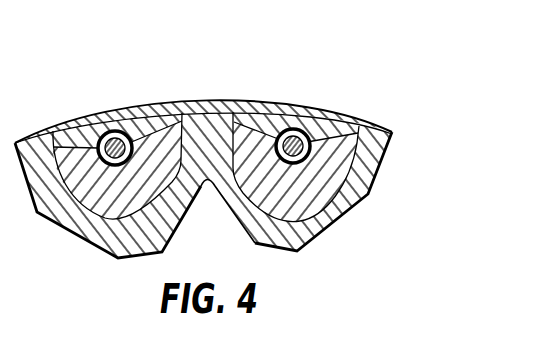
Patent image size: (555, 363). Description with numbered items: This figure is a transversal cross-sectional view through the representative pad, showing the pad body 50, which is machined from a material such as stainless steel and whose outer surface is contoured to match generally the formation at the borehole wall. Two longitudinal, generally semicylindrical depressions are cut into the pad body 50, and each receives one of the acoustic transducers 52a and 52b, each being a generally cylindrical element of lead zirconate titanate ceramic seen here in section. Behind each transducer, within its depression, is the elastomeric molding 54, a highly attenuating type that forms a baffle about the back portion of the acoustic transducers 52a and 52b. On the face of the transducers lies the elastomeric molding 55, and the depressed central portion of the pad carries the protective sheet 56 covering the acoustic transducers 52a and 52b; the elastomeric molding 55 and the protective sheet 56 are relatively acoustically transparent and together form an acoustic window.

The pad body 50 is at (208, 157).
The acoustic transducer 52a is at (109, 131).
The acoustic transducer 52b is at (298, 130).
The elastomeric molding 54 is at (140, 203).
The elastomeric molding 55 is at (185, 110).
The protective sheet 56 is at (250, 100).